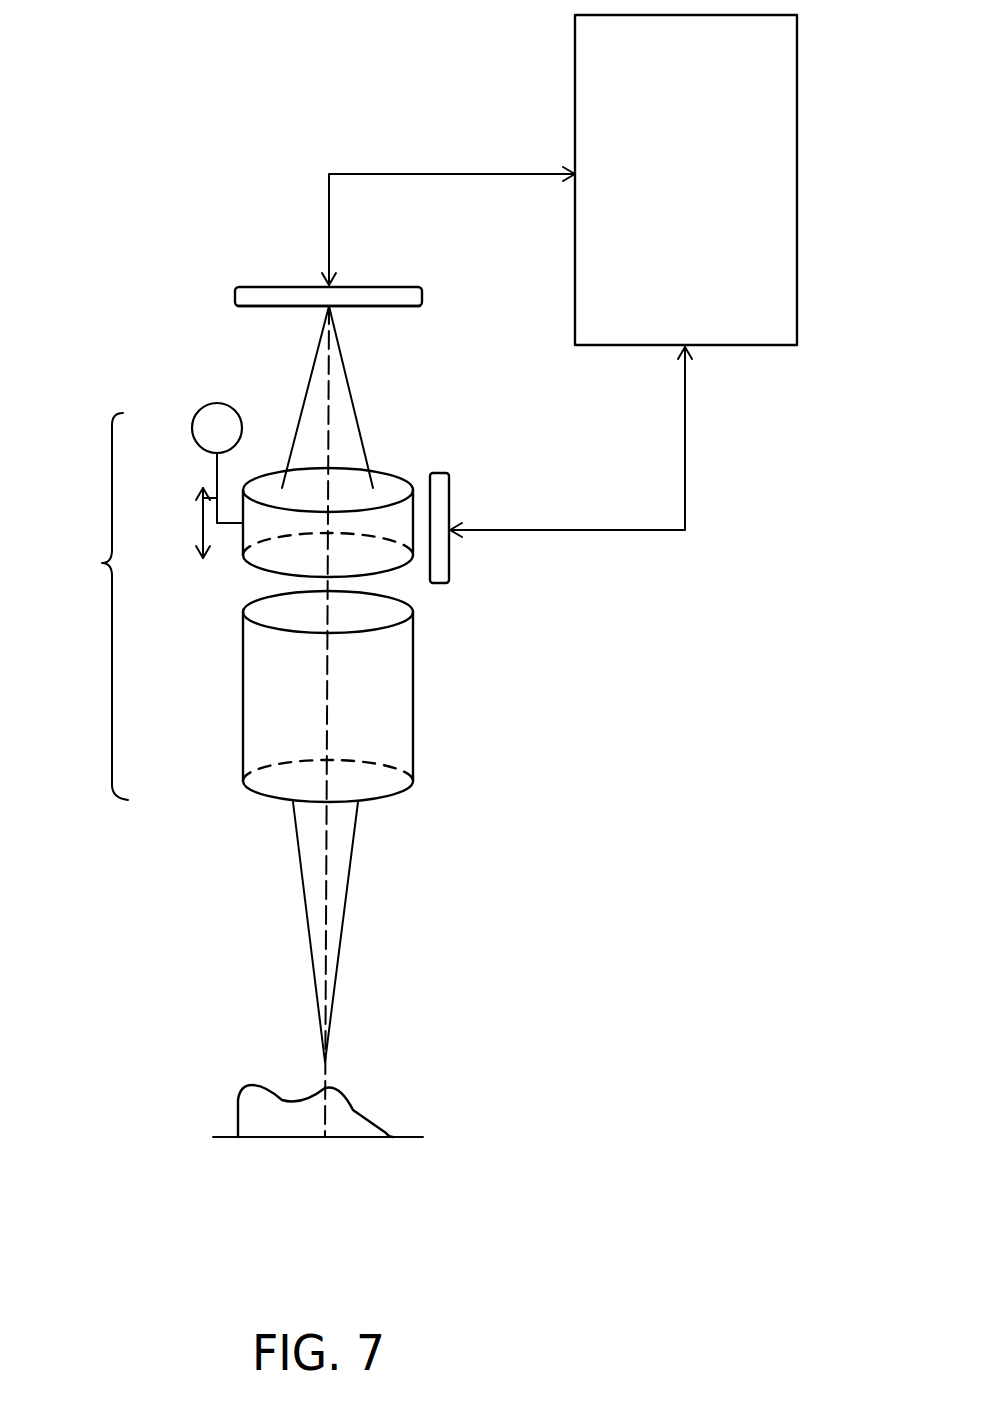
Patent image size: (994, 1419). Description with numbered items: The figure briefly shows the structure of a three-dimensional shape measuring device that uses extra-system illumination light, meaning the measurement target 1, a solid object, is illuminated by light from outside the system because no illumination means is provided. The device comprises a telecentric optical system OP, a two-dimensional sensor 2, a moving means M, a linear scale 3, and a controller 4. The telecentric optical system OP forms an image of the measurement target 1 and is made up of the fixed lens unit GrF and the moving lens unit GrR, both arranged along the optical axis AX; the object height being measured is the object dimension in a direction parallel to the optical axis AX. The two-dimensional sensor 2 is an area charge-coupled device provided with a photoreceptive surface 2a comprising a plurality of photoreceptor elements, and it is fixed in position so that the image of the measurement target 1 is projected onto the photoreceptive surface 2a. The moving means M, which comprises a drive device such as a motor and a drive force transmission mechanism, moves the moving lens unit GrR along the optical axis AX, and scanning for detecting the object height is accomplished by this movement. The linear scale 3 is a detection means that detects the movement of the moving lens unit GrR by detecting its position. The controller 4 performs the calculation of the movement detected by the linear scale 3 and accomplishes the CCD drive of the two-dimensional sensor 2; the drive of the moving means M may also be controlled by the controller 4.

The measurement target 1 is at (345, 1117).
The two-dimensional sensor 2 is at (388, 308).
The photoreceptive surface 2a is at (270, 308).
The linear scale 3 is at (450, 563).
The controller 4 is at (798, 105).
The telecentric optical system OP is at (81, 606).
The moving lens unit GrR is at (273, 525).
The fixed lens unit GrF is at (382, 702).
The optical axis AX is at (328, 675).
The moving means M is at (217, 480).